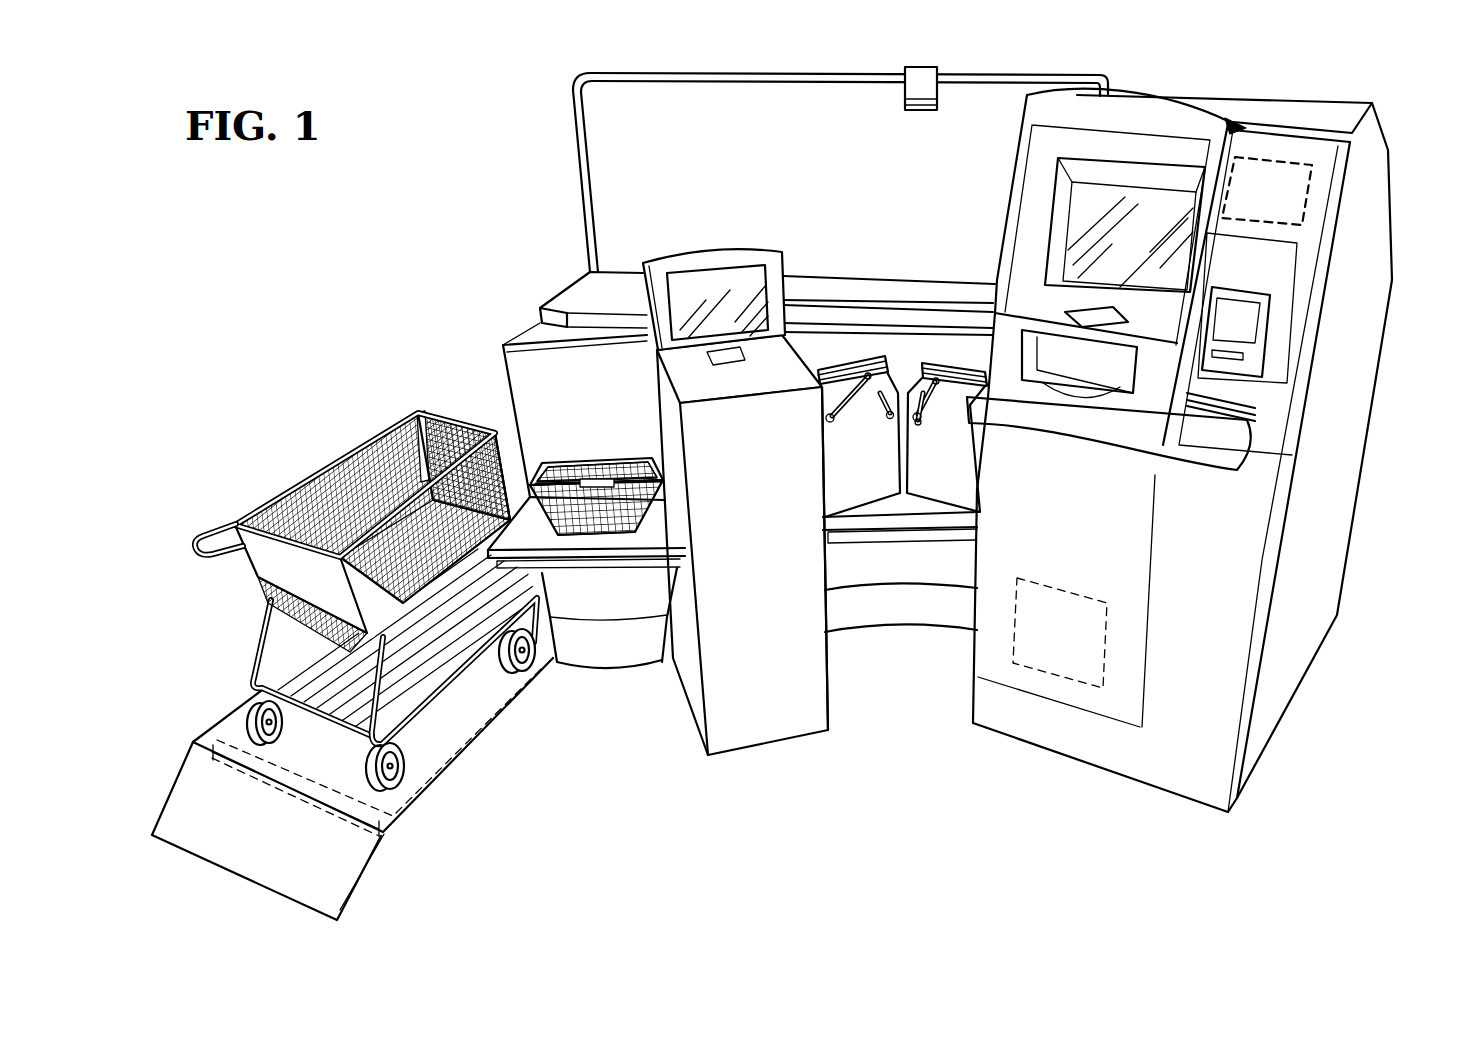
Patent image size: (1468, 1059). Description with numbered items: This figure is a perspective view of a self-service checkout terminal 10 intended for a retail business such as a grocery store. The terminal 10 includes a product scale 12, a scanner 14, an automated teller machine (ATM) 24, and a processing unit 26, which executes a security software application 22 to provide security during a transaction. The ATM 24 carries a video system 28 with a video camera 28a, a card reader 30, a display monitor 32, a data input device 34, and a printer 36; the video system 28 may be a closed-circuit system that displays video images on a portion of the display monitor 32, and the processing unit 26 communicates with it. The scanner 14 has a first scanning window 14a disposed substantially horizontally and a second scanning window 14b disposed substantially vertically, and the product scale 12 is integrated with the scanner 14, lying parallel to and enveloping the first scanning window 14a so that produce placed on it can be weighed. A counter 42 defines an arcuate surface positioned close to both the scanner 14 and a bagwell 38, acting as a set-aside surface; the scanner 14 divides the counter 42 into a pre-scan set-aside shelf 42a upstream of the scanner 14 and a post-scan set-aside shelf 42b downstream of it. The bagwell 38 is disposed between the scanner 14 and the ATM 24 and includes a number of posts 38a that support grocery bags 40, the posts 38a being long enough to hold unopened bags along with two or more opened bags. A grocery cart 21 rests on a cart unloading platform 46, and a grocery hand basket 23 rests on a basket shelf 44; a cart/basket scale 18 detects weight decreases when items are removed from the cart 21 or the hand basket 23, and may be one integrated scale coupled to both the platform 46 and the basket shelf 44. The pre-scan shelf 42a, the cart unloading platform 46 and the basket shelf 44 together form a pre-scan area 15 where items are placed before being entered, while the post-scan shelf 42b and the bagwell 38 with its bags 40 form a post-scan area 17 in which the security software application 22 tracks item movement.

The self-service checkout terminal 10 is at (443, 208).
The product scale 12 is at (680, 383).
The scanner 14 is at (740, 248).
The first scanning window 14a is at (735, 352).
The second scanning window 14b is at (703, 282).
The pre-scan area 15 is at (418, 362).
The post-scan area 17 is at (897, 258).
The cart/basket scale 18 is at (597, 567).
The grocery cart 21 is at (340, 462).
The security software application 22 is at (976, 532).
The grocery hand basket 23 is at (598, 478).
The automated teller machine 24 is at (1362, 246).
The processing unit 26 is at (1068, 605).
The video system 28 is at (1282, 188).
The video camera 28a is at (915, 96).
The card reader 30 is at (1243, 353).
The display monitor 32 is at (1087, 208).
The data input device 34 is at (1100, 322).
The printer 36 is at (1257, 407).
The bagwell 38 is at (903, 500).
The posts 38a is at (833, 422).
The grocery bags 40 is at (822, 486).
The counter 42 is at (567, 332).
The pre-scan set-aside shelf 42a is at (540, 326).
The post-scan set-aside shelf 42b is at (847, 325).
The basket shelf 44 is at (664, 532).
The cart unloading platform 46 is at (452, 708).